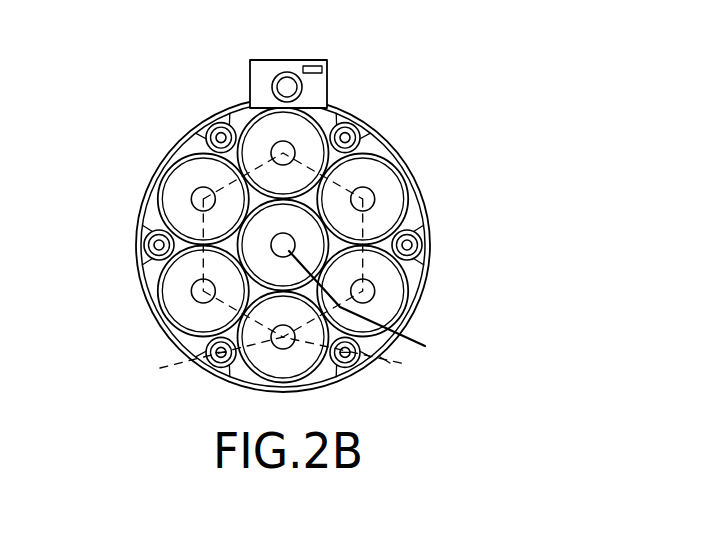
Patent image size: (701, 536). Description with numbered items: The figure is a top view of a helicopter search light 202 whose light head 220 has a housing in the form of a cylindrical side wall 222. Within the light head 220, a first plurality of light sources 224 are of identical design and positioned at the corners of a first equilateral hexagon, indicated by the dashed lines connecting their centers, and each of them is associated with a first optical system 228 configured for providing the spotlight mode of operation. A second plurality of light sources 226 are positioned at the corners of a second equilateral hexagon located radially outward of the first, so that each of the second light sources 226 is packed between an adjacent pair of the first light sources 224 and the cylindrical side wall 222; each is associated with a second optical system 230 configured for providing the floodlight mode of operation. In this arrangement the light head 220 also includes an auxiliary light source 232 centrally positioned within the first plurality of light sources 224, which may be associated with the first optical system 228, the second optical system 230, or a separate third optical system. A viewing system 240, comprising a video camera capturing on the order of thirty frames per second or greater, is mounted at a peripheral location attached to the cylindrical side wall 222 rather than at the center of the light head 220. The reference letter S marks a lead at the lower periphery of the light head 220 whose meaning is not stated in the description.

The helicopter search light 202 is at (138, 133).
The light head 220 is at (422, 133).
The cylindrical side wall 222 is at (430, 271).
The first plurality of light sources 224 is at (200, 292).
The second plurality of light sources 226 is at (147, 243).
The first optical system 228 is at (178, 316).
The second optical system 230 is at (153, 246).
The auxiliary light source 232 is at (369, 297).
The viewing system 240 is at (322, 82).
The spacing S is at (385, 360).